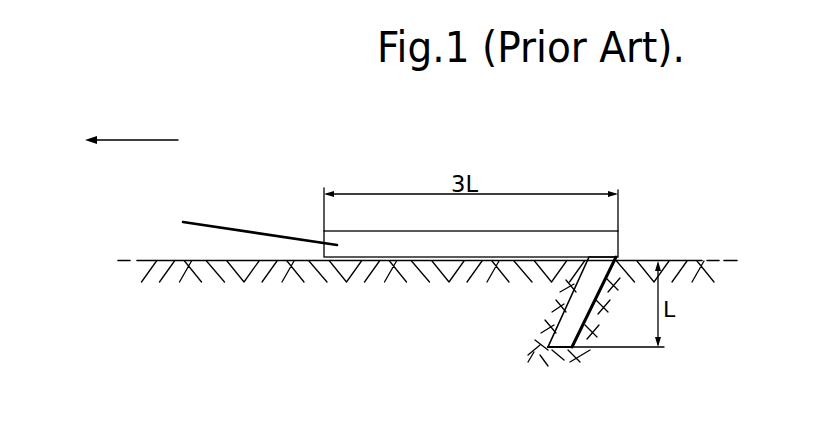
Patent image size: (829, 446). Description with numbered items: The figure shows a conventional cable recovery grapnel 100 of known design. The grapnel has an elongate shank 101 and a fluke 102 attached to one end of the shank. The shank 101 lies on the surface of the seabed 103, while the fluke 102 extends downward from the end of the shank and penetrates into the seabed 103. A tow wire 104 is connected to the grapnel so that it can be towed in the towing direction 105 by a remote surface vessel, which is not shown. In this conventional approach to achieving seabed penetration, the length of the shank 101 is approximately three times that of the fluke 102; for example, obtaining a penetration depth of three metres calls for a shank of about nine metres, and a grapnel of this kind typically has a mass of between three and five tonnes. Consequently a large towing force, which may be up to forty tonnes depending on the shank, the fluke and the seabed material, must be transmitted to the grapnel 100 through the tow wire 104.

The cable recovery grapnel 100 is at (342, 170).
The shank 101 is at (618, 243).
The fluke 102 is at (562, 348).
The seabed 103 is at (702, 260).
The tow wire 104 is at (243, 225).
The towing direction 105 is at (140, 140).